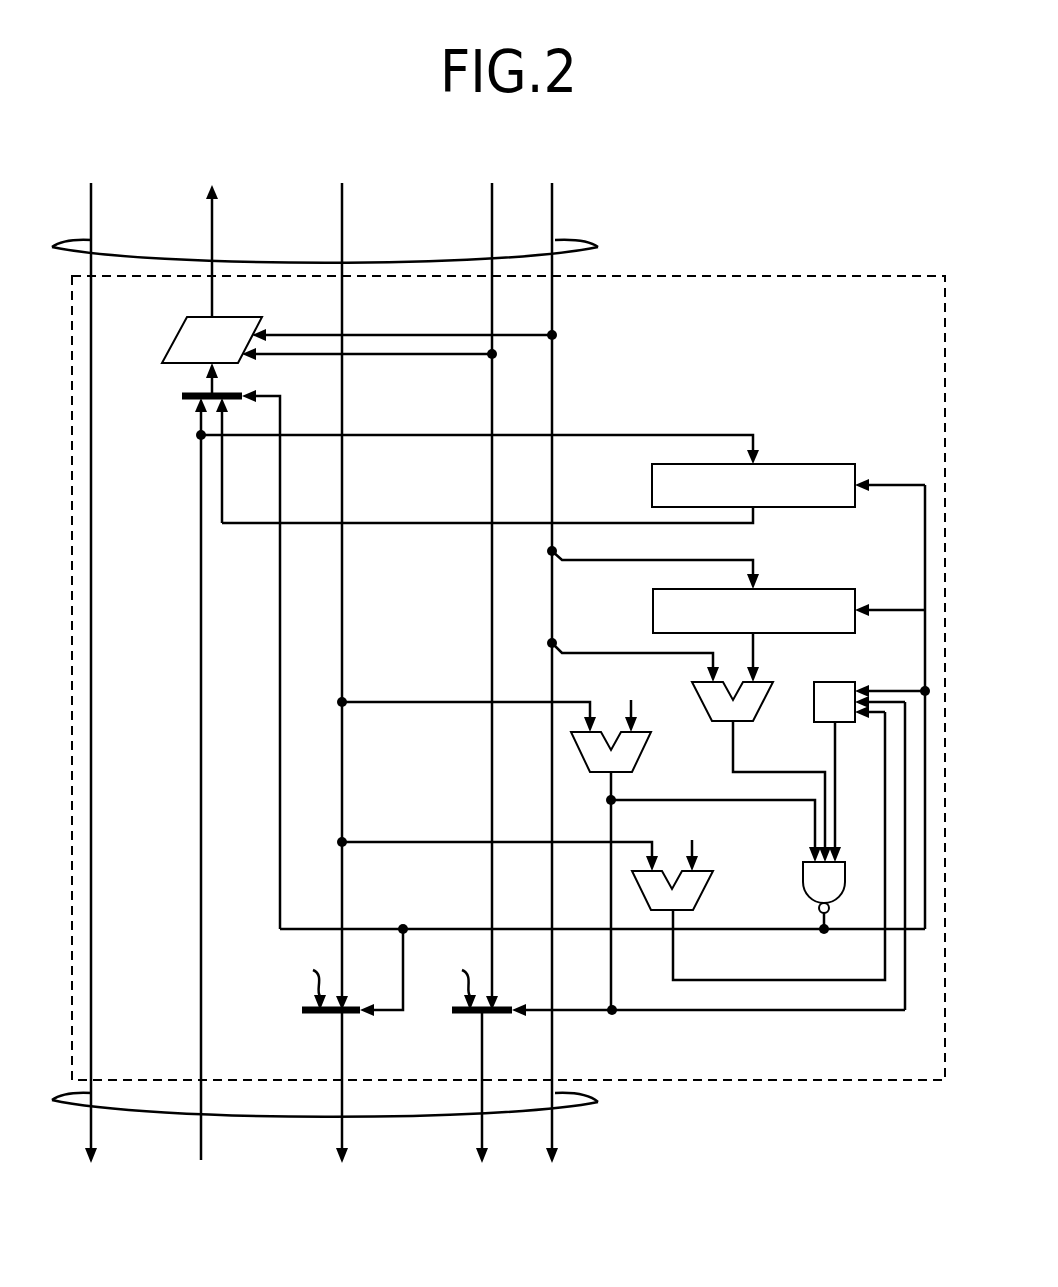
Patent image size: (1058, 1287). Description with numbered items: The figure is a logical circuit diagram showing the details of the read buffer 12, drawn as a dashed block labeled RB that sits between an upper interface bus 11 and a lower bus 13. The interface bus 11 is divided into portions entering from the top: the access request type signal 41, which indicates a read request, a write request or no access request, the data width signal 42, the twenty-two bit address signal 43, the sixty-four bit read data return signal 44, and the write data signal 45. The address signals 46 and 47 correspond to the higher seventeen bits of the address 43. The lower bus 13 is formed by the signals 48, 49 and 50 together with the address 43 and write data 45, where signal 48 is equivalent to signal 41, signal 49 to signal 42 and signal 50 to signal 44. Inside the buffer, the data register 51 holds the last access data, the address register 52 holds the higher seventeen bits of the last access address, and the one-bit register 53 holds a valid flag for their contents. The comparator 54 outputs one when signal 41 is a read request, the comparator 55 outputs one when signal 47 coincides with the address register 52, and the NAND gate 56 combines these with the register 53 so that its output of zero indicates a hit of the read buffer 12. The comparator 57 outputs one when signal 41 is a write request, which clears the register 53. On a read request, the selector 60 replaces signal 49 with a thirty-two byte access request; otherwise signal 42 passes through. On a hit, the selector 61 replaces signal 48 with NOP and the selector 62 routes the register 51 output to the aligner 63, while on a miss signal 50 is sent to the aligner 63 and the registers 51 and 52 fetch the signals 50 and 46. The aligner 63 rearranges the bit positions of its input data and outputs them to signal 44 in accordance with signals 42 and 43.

The interface bus 11 is at (598, 245).
The read buffer 12 is at (710, 276).
The bus 13 is at (598, 1102).
The access request type signal 41 is at (342, 222).
The data width signal 42 is at (492, 222).
The address signal 43 is at (552, 222).
The read data return signal 44 is at (212, 222).
The write data signal 45 is at (91, 222).
The address signal 46 is at (758, 560).
The address signal 47 is at (605, 653).
The access request type signal 48 is at (342, 1130).
The data width signal 49 is at (482, 1133).
The read data signal 50 is at (201, 1138).
The data register 51 is at (808, 464).
The address register 52 is at (800, 589).
The 1-bit register 53 is at (840, 682).
The comparator 54 is at (645, 755).
The comparator 55 is at (768, 705).
The NAND gate 56 is at (803, 885).
The comparator 57 is at (658, 913).
The selector 60 is at (462, 1015).
The selector 61 is at (305, 1015).
The selector 62 is at (188, 401).
The aligner 63 is at (176, 340).